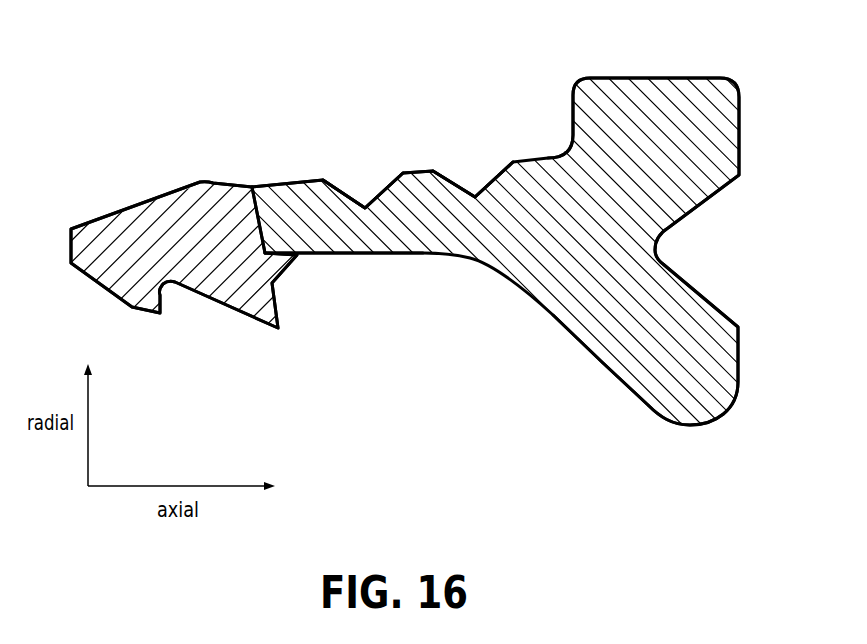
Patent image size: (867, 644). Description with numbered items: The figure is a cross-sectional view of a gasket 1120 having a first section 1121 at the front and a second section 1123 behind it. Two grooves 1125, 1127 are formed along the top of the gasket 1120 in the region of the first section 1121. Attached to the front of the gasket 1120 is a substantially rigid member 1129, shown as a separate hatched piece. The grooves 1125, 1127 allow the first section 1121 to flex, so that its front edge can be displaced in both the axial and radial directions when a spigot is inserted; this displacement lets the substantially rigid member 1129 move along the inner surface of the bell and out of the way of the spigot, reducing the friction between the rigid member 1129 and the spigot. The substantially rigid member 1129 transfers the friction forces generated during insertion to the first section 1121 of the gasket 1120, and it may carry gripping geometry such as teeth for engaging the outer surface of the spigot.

The gasket 1120 is at (302, 68).
The first section 1121 is at (515, 320).
The second section 1123 is at (760, 458).
The groove 1125 is at (363, 188).
The groove 1127 is at (475, 190).
The substantially rigid member 1129 is at (163, 196).